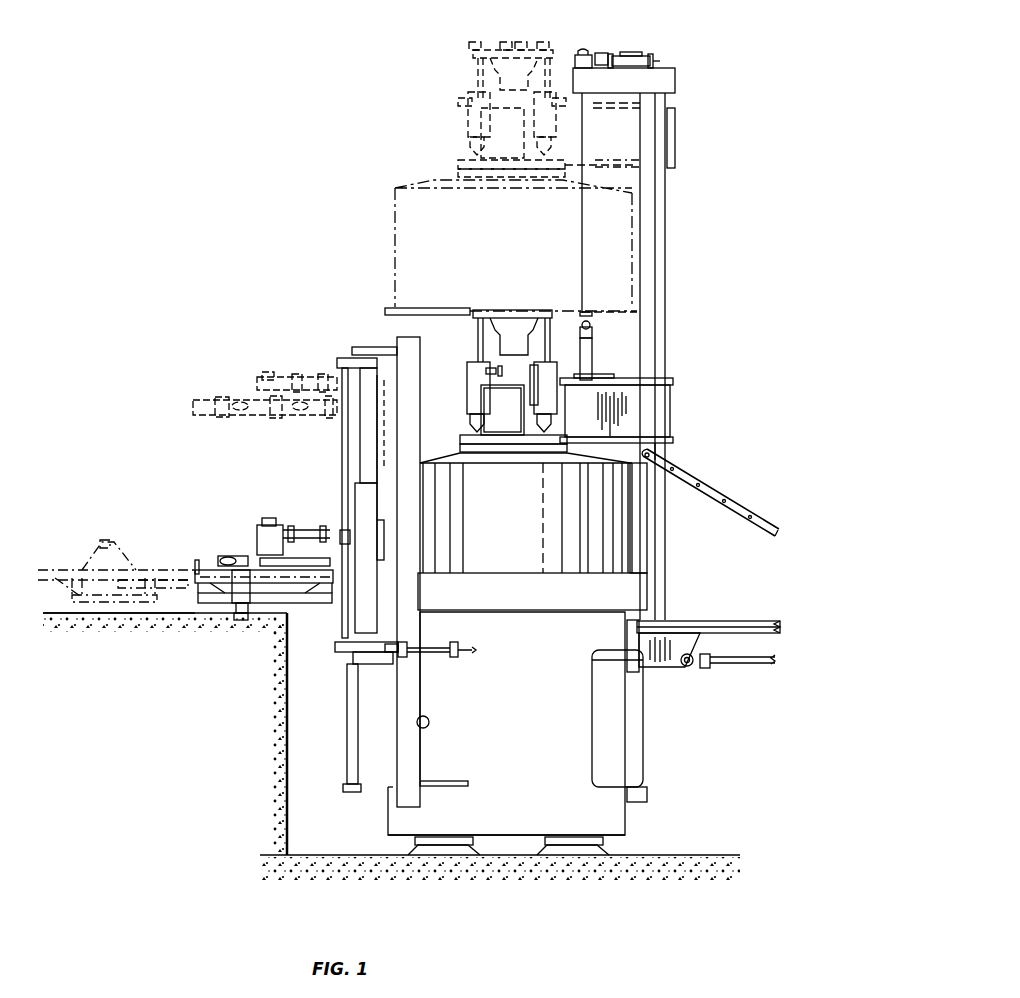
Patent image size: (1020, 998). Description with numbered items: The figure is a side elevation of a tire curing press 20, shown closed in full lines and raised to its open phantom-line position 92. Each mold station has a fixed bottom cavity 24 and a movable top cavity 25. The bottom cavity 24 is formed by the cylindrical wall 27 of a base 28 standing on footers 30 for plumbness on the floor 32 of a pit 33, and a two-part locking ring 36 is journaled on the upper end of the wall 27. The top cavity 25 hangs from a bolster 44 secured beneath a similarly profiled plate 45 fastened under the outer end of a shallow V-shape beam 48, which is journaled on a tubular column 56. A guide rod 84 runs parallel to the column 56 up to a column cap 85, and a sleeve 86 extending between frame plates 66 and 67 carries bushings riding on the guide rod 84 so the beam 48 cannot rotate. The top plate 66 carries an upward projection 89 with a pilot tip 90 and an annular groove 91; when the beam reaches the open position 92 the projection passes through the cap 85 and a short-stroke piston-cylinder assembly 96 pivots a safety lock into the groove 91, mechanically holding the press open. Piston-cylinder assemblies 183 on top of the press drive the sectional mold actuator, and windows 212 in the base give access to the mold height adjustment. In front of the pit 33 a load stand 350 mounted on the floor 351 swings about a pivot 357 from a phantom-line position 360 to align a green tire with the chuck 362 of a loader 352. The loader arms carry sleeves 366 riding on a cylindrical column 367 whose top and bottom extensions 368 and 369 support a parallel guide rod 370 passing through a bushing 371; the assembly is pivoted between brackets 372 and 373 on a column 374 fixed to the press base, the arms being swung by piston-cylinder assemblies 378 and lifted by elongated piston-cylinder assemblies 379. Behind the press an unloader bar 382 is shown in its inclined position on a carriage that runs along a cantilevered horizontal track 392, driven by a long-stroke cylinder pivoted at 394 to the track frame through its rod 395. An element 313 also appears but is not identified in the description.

The press 20 is at (672, 452).
The fixed bottom cavity 24 is at (622, 610).
The movable top cavity 25 is at (627, 533).
The cylindrical wall 27 is at (587, 763).
The base 28 is at (583, 728).
The footers 30 is at (566, 834).
The floor 32 is at (693, 855).
The pit 33 is at (326, 783).
The two-part locking ring 36 is at (485, 574).
The bolster 44 is at (466, 448).
The plate 45 is at (465, 430).
The shallow V-shape beam 48 is at (488, 399).
The tubular column 56 is at (638, 172).
The top frame plate 66 is at (648, 380).
The frame plate 67 is at (596, 445).
The guide rod 84 is at (666, 352).
The column cap 85 is at (676, 80).
The sleeve 86 is at (673, 412).
The projection 89 is at (591, 358).
The pilot tip 90 is at (582, 322).
The annular groove 91 is at (590, 338).
The open position 92 is at (390, 237).
The short stroke piston-cylinder assembly 96 is at (630, 48).
The piston-cylinder assemblies 183 is at (553, 400).
The access openings 212 is at (427, 724).
The coupling 313 is at (707, 664).
The load stand 350 is at (302, 601).
The floor 351 is at (60, 604).
The loader 352 is at (240, 380).
The pivot 357 is at (238, 590).
The phantom line position 360 is at (77, 558).
The loader chuck 362 is at (240, 417).
The vertically elongated sleeves 366 is at (378, 545).
The cylindrical column 367 is at (378, 504).
The top extension 368 is at (338, 360).
The bottom extension 369 is at (328, 658).
The guide rod 370 is at (342, 478).
The bushing 371 is at (342, 525).
The projecting bracket 372 is at (366, 347).
The projecting bracket 373 is at (368, 664).
The column 374 is at (411, 748).
The piston-cylinder assemblies 378 is at (430, 646).
The elongated piston-cylinder assemblies 379 is at (348, 785).
The unloader bar 382 is at (734, 500).
The horizontal track 392 is at (752, 625).
The pivot 394 is at (754, 665).
The rod 395 is at (681, 666).